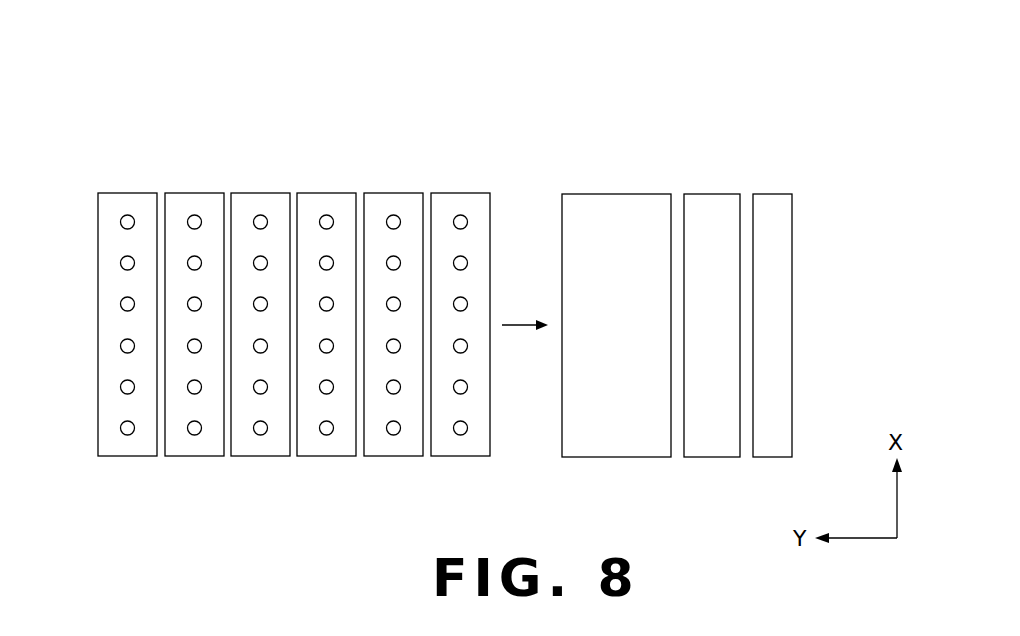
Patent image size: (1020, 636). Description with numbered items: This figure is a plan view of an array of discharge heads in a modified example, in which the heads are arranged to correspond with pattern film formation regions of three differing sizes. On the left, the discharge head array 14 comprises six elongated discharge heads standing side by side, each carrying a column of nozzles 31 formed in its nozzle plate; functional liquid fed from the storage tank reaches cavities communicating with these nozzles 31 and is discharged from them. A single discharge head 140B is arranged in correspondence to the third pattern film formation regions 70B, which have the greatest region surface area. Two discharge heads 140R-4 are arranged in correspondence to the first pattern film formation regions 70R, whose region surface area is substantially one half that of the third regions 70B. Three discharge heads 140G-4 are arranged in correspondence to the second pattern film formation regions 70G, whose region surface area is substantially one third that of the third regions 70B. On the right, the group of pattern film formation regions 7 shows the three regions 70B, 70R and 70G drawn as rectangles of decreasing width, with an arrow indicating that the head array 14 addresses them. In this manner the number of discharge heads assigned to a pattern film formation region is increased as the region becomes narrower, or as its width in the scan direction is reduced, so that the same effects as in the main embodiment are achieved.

The light source device 14 is at (478, 106).
The light modulation device 7 is at (756, 106).
The discharge head 140B is at (131, 204).
The discharge heads 140R-4 is at (248, 204).
The discharge heads 140G-4 is at (447, 205).
The nozzle 31 is at (120, 222).
The third pattern film formation region 70B is at (616, 325).
The first pattern film formation region 70R is at (712, 325).
The second pattern film formation region 70G is at (783, 322).